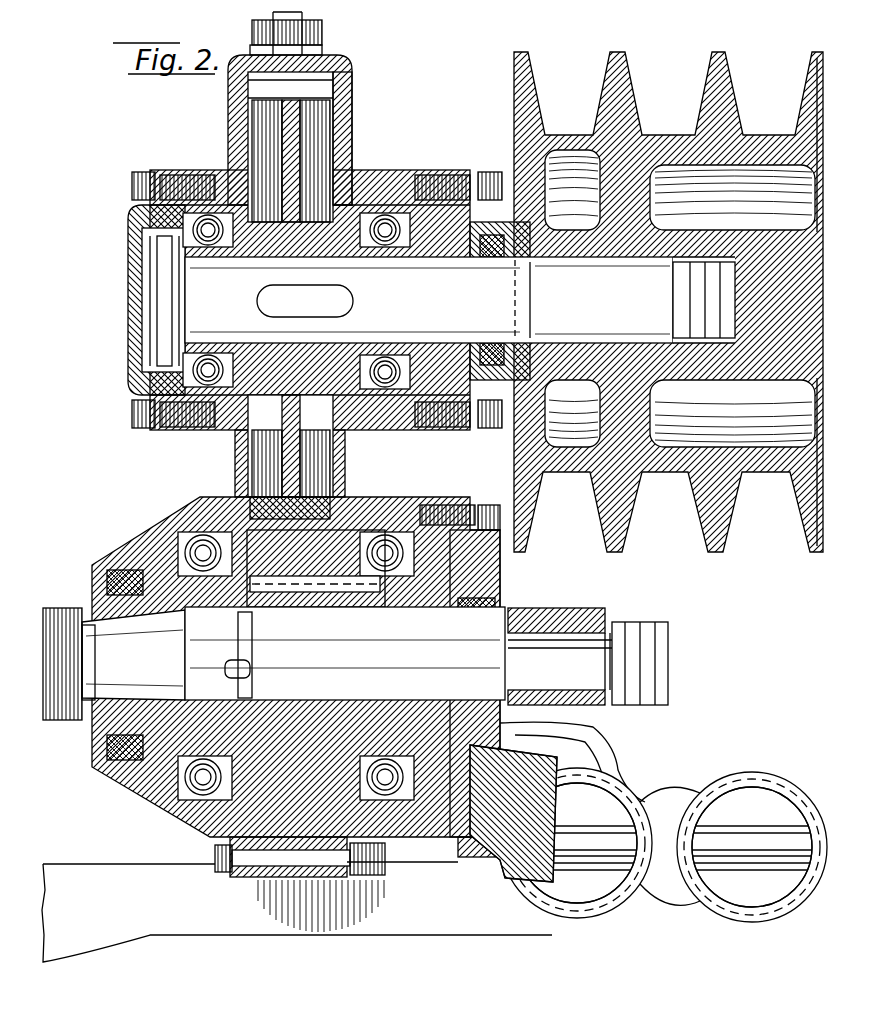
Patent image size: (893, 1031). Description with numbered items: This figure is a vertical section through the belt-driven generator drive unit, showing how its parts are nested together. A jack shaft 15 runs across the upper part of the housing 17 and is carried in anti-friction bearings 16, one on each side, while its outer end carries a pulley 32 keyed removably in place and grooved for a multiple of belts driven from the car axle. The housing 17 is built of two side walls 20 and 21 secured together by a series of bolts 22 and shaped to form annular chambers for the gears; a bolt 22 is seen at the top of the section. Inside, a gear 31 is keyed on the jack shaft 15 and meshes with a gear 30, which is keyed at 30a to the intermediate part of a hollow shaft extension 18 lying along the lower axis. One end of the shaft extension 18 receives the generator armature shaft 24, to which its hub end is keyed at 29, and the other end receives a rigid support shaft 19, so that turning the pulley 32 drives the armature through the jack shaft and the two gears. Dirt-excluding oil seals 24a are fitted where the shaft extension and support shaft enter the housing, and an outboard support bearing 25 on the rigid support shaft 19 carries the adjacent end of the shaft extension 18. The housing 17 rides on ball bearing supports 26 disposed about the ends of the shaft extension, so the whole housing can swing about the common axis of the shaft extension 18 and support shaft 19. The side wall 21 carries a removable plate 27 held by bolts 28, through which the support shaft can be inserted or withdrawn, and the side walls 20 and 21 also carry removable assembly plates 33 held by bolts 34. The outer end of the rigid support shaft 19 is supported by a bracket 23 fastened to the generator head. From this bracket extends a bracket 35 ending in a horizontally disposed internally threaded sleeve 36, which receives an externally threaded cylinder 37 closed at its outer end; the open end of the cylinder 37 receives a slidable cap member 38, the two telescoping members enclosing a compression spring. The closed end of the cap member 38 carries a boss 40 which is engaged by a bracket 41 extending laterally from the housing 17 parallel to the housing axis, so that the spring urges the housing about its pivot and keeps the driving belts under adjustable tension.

The jack shaft 15 is at (322, 330).
The anti-friction bearings 16 is at (225, 247).
The housing 17 is at (352, 66).
The shaft extension 18 is at (322, 728).
The rigid support shaft 19 is at (570, 640).
The side wall 20 is at (172, 187).
The side wall 21 is at (452, 172).
The bolts 22 is at (322, 46).
The bracket 23 is at (143, 935).
The armature shaft 24 is at (56, 608).
The oil seals 24a is at (115, 572).
The outboard support bearing 25 is at (435, 656).
The ball bearing supports 26 is at (217, 755).
The removable plate 27 is at (468, 552).
The bolts 28 is at (489, 505).
The key 29 is at (150, 628).
The gear 30 is at (312, 600).
The key 30a is at (345, 600).
The gear 31 is at (333, 497).
The pulley 32 is at (664, 135).
The removable plates 33 is at (112, 380).
The bolts 34 is at (495, 172).
The bracket 35 is at (605, 762).
The cylindrical socket or sleeve 36 is at (598, 925).
The externally threaded cylinder 37 is at (547, 922).
The slidable cylinder or cap member 38 is at (610, 802).
The boss or extension 40 is at (568, 833).
The bracket 41 is at (382, 857).